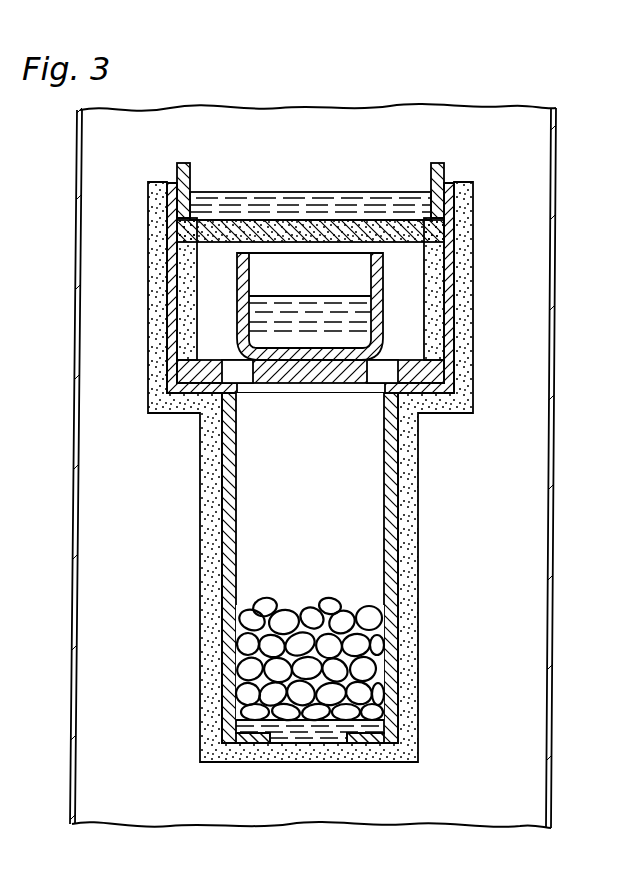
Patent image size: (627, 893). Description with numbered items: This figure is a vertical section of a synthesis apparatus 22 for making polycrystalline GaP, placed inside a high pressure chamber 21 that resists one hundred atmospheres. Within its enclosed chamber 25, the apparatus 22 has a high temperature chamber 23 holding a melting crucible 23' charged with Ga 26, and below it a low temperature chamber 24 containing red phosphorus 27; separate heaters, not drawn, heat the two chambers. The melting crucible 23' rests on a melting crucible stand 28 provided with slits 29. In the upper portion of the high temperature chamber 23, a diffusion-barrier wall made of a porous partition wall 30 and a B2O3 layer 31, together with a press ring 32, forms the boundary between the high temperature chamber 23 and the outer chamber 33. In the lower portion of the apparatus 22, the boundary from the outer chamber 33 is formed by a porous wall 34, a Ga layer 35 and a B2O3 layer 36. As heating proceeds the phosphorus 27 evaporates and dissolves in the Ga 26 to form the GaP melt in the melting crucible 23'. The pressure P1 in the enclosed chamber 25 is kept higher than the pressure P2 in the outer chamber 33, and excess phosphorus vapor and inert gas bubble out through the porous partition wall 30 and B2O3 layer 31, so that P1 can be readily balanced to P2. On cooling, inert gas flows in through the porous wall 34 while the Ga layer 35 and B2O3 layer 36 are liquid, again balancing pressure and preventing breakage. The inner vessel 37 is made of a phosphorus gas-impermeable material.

The high pressure chamber 21 is at (552, 292).
The synthesis apparatus 22 is at (531, 222).
The high temperature chamber 23 is at (346, 288).
The melting crucible 23' is at (350, 289).
The low temperature chamber 24 is at (370, 665).
The enclosed chamber 25 is at (362, 469).
The Ga 26 is at (290, 302).
The red phosphorus 27 is at (373, 630).
The melting crucible stand 28 is at (410, 372).
The slits 29 is at (381, 372).
The porous partition wall 30 is at (340, 228).
The B2O3 layer 31 is at (297, 206).
The press ring 32 is at (445, 180).
The outer chamber 33 is at (346, 128).
The porous wall 34 is at (323, 745).
The Ga layer 35 is at (268, 757).
The B2O3 layer 36 is at (378, 745).
The inner vessel 37 is at (394, 516).
The pressure in the enclosed chamber P1 is at (274, 492).
The pressure in the outer chamber P2 is at (105, 790).